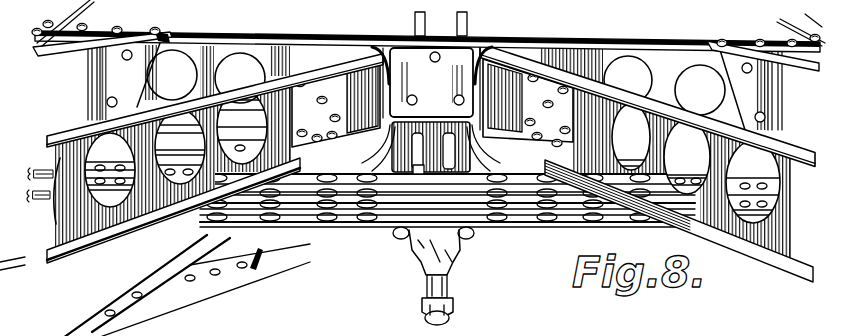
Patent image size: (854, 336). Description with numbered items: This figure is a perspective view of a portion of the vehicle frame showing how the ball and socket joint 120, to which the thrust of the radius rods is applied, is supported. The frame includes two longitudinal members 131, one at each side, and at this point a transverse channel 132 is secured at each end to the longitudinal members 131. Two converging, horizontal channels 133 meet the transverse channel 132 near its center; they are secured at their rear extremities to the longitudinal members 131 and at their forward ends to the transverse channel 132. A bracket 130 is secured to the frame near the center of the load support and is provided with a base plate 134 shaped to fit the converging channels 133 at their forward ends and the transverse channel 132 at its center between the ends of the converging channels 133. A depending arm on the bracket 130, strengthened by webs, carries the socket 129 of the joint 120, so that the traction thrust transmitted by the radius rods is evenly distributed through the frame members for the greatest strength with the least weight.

The ball and socket joint 120 is at (455, 270).
The socket 129 is at (403, 243).
The bracket 130 is at (540, 96).
The longitudinal members 131 is at (80, 8).
The transverse channel 132 is at (262, 31).
The converging horizontal channels 133 is at (146, 218).
The base plate 134 is at (528, 133).